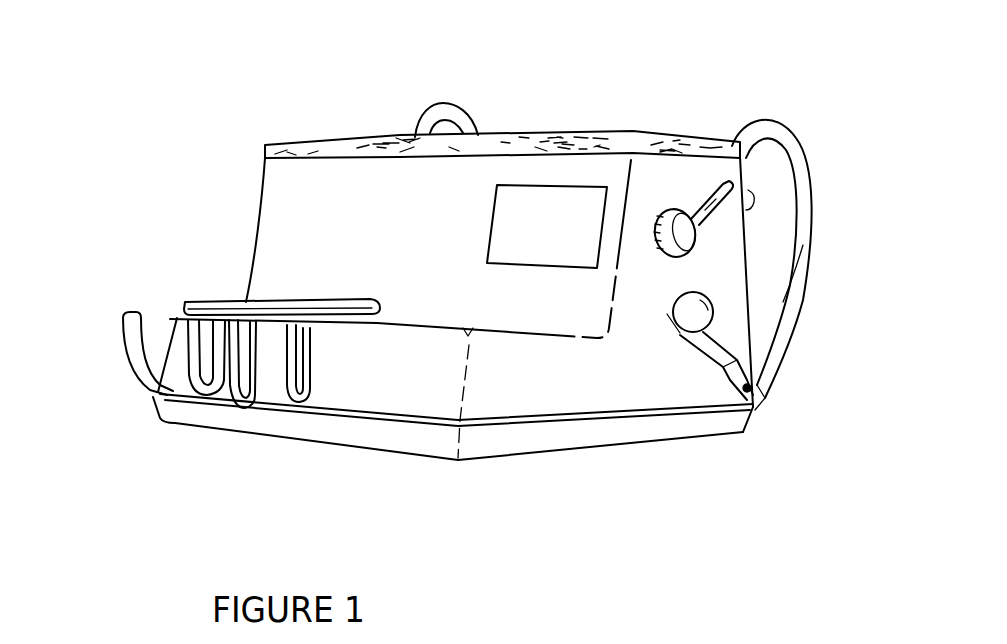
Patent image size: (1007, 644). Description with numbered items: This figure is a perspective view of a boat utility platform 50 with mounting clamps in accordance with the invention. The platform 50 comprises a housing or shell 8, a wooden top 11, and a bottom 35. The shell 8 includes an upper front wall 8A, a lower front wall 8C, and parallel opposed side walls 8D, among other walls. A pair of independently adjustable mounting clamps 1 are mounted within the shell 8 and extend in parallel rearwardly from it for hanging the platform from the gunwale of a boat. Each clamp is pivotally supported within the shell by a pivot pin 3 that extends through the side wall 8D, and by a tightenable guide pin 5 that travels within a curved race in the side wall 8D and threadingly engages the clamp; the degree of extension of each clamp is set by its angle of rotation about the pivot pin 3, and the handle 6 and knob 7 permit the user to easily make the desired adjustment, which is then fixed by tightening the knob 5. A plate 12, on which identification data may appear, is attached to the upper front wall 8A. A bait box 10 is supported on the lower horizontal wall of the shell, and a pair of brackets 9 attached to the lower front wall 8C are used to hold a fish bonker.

The mounting clamp 1 is at (445, 107).
The boat utility platform 50 is at (360, 133).
The wooden top 11 is at (263, 147).
The upper front wall 8A is at (285, 223).
The plate 12 is at (542, 197).
The tightenable guide pin 5 is at (670, 207).
The knob 7 is at (690, 320).
The pivot pin 3 is at (745, 412).
The handle 6 is at (753, 413).
The bait box 10 is at (263, 305).
The brackets 9 is at (247, 387).
The housing or shell 8 is at (578, 403).
The lower front wall 8C is at (395, 385).
The side wall 8D is at (518, 383).
The bottom 35 is at (310, 440).